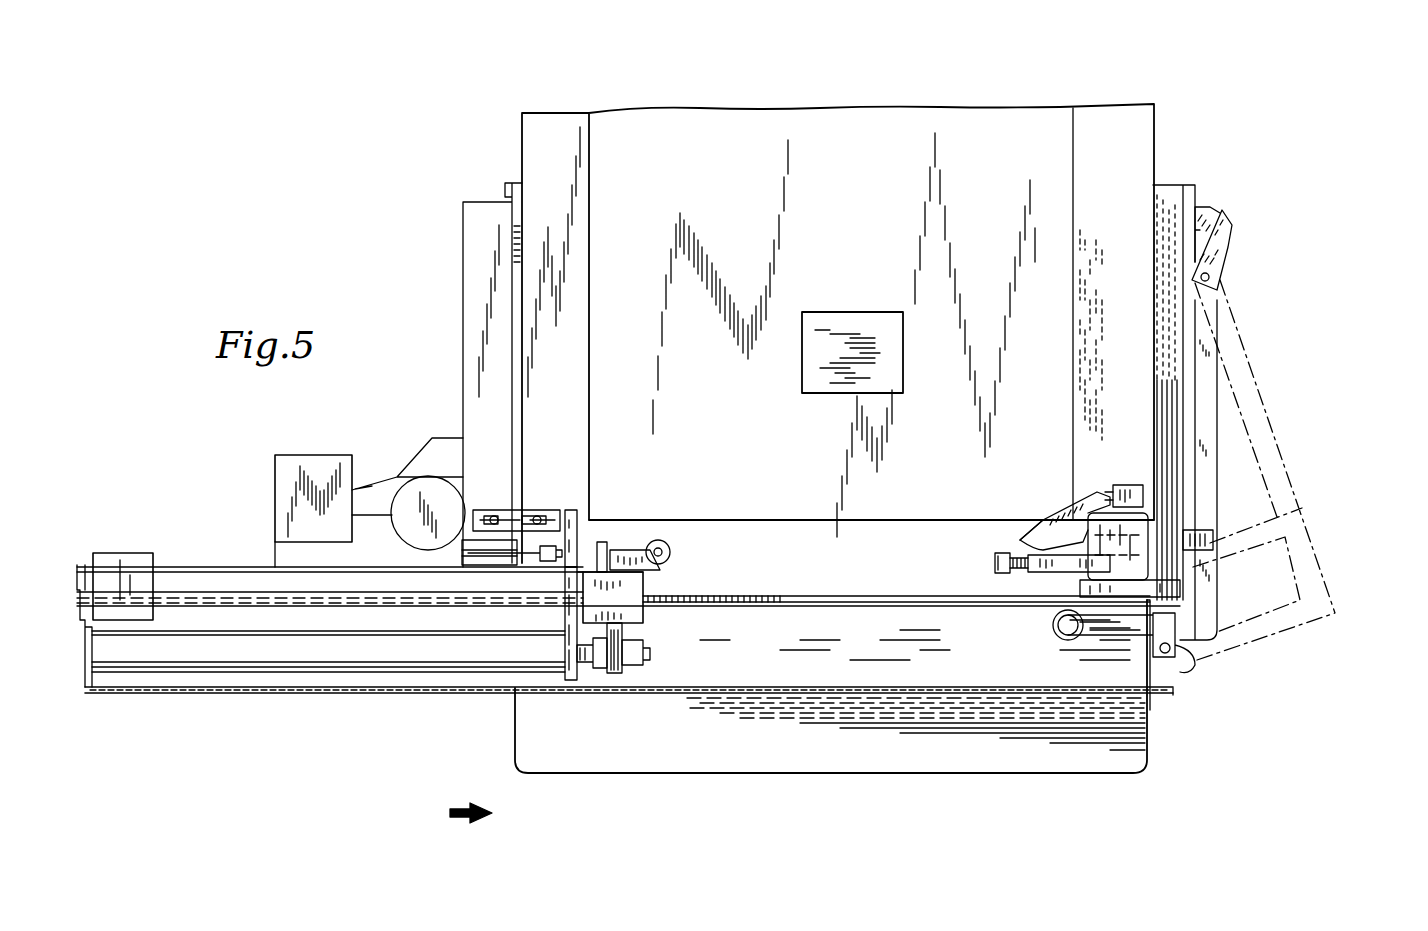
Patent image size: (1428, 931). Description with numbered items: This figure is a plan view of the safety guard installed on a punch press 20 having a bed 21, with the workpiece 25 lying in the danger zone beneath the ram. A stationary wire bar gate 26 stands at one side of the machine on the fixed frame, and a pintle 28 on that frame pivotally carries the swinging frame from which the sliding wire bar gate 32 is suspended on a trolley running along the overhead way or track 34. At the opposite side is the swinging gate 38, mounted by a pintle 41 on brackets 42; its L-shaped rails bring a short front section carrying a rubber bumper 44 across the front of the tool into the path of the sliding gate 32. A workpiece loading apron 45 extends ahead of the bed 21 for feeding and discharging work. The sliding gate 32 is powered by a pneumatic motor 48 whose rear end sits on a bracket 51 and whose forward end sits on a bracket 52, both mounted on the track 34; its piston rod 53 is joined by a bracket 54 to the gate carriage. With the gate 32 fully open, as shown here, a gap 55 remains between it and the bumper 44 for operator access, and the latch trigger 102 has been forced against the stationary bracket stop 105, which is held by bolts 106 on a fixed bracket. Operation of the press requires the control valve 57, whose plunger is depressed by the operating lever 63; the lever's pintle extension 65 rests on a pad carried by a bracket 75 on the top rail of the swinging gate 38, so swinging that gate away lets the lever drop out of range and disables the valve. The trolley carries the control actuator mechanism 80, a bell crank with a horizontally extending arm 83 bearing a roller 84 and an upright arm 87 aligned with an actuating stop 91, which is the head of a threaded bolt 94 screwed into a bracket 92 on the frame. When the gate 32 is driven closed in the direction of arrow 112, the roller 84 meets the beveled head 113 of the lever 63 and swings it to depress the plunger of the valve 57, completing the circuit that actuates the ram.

The punch press 20 is at (609, 146).
The bed 21 is at (1118, 126).
The workpiece 25 is at (846, 326).
The stationary wire bar gate 26 is at (512, 297).
The pintle 28 is at (428, 500).
The sliding wire bar gate 32 is at (203, 592).
The overhead way or track 34 is at (756, 600).
The swinging gate 38 is at (1210, 357).
The pintle 41 is at (1212, 278).
The brackets 42 is at (1207, 217).
The rubber bumper 44 is at (1058, 640).
The workpiece loading apron 45 is at (880, 765).
The pneumatic motor 48 is at (330, 645).
The bracket 51 is at (90, 660).
The bracket 52 is at (575, 675).
The piston rod 53 is at (648, 652).
The bracket 54 is at (618, 676).
The gap 55 is at (856, 607).
The control valve 57 is at (1128, 484).
The plunger button operating lever 63 is at (1058, 510).
The pintle extension 65 is at (1110, 492).
The bracket 75 is at (1203, 545).
The control actuator mechanism 80 is at (637, 522).
The horizontally extending arm 83 is at (660, 570).
The roller 84 is at (670, 552).
The upright arm 87 is at (662, 548).
The actuating stop 91 is at (1008, 555).
The bracket 92 is at (1063, 570).
The threaded bolt 94 is at (1008, 568).
The latch trigger 102 is at (578, 556).
The stationary bracket stop 105 is at (575, 535).
The bolts 106 is at (537, 515).
The arrow 112 is at (452, 816).
The beveled head 113 is at (1028, 532).